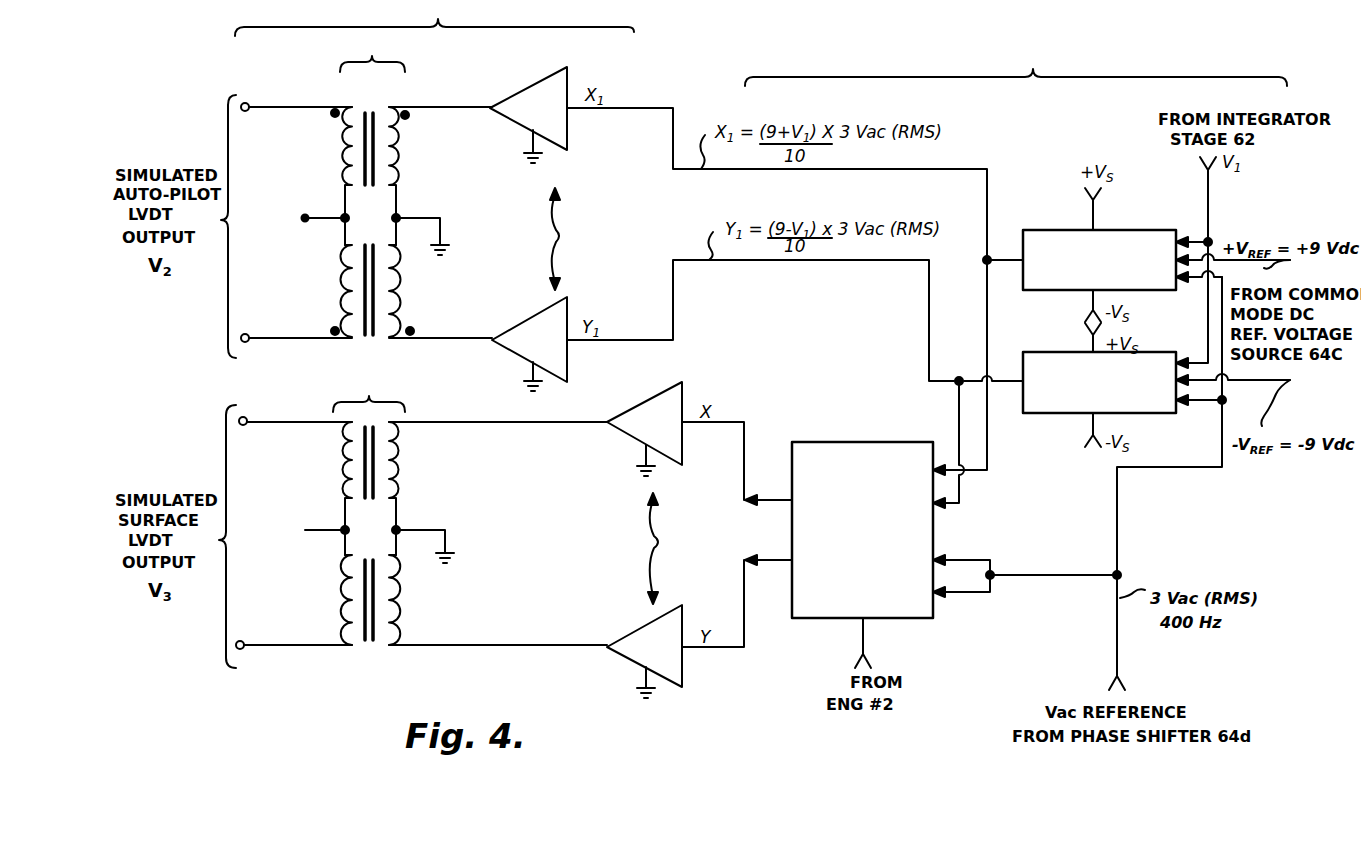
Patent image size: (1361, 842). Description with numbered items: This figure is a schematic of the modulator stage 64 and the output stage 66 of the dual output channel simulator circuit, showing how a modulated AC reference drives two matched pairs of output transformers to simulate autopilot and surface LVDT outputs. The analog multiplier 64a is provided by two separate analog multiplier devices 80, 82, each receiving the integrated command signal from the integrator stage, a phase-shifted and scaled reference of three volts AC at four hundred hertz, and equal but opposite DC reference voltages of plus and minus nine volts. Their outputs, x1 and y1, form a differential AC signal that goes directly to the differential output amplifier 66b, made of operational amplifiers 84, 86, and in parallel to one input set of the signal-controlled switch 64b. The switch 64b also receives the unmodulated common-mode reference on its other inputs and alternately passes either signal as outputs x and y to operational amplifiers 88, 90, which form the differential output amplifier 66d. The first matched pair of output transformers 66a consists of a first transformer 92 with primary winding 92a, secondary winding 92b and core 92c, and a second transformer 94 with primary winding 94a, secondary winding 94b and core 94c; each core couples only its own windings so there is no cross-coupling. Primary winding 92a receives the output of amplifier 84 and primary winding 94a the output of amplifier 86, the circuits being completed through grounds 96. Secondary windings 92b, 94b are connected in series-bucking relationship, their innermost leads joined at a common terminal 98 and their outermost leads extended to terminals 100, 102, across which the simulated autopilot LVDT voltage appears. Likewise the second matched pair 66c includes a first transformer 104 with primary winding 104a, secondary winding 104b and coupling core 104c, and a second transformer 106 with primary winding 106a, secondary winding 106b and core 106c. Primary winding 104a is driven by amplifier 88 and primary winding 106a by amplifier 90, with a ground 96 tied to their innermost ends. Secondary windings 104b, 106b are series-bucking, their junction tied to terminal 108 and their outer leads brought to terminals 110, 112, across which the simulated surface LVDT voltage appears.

The modulator stage 64 is at (1016, 64).
The analog multiplier 64a is at (1012, 184).
The signal-controlled switch 64b is at (850, 442).
The output stage 66 is at (445, 17).
The matched pair of output transformers 66a is at (372, 54).
The differential output amplifier 66b is at (583, 239).
The matched pair of output transformers 66c is at (369, 394).
The differential output amplifier 66d is at (680, 548).
The analog multiplier device 80 is at (1045, 230).
The analog multiplier device 82 is at (1045, 352).
The operational amplifier 84 is at (530, 85).
The operational amplifier 86 is at (524, 317).
The operational amplifier 88 is at (648, 398).
The operational amplifier 90 is at (622, 654).
The first transformer 92 is at (381, 155).
The primary winding 92a is at (396, 150).
The secondary winding 92b is at (348, 150).
The core 92c is at (375, 110).
The second transformer 94 is at (383, 322).
The primary winding 94a is at (396, 288).
The secondary winding 94b is at (348, 284).
The core 94c is at (373, 340).
The ground 96 is at (667, 698).
The common terminal 98 is at (303, 218).
The terminal 100 is at (246, 103).
The terminal 102 is at (248, 343).
The first transformer 104 is at (438, 474).
The primary winding 104a is at (396, 462).
The secondary winding 104b is at (350, 462).
The coupling core 104c is at (368, 506).
The second transformer 106 is at (441, 632).
The primary winding 106a is at (400, 600).
The secondary winding 106b is at (350, 594).
The core 106c is at (375, 642).
The terminal 108 is at (303, 532).
The terminal 110 is at (245, 426).
The terminal 112 is at (242, 650).